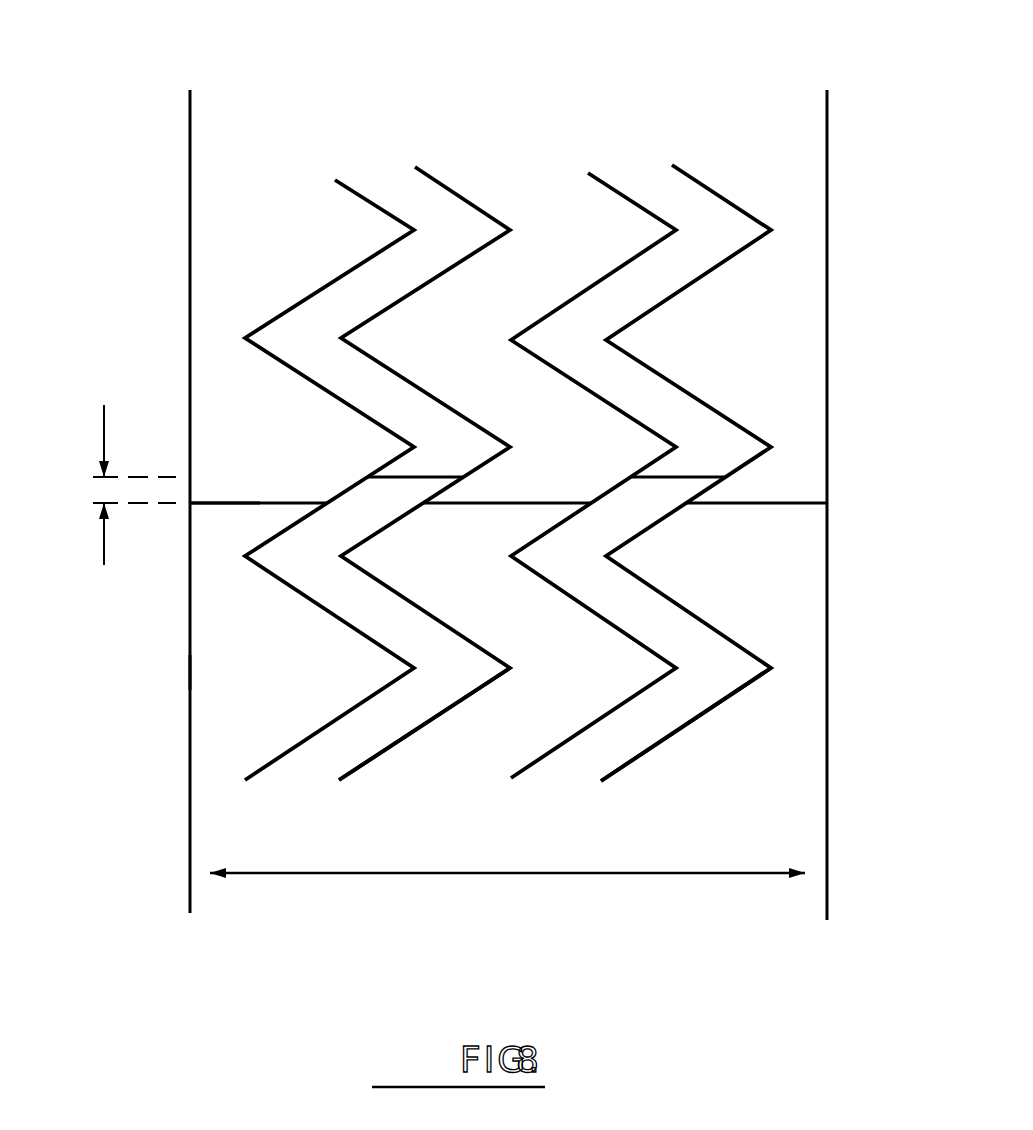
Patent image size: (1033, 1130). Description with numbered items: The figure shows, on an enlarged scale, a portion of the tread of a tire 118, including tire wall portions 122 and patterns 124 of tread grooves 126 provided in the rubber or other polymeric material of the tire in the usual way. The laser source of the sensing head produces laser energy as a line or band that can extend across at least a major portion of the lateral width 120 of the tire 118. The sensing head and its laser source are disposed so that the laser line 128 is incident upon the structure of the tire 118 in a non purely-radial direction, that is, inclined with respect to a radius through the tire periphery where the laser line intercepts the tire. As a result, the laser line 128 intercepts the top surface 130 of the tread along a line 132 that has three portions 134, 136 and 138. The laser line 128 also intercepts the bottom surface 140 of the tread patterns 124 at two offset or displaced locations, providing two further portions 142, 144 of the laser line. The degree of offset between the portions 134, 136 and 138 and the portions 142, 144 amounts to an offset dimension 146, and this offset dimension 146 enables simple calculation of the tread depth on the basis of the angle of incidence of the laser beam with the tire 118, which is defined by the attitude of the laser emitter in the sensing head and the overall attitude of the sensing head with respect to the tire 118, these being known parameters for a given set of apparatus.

The tire 118 is at (182, 828).
The lateral width 120 is at (480, 875).
The tire wall portions 122 is at (188, 672).
The patterns of tread grooves 124 is at (430, 212).
The tread grooves 126 is at (368, 737).
The laser line 128 is at (829, 502).
The top surface of the tread 130 is at (235, 138).
The line 132 is at (233, 505).
The portion of the line 134 is at (280, 502).
The portion of the line 136 is at (523, 502).
The portion of the line 138 is at (763, 508).
The bottom surface of the tread patterns 140 is at (333, 588).
The further portion of the laser line 142 is at (423, 477).
The further portion of the laser line 144 is at (693, 475).
The offset dimension 146 is at (102, 430).